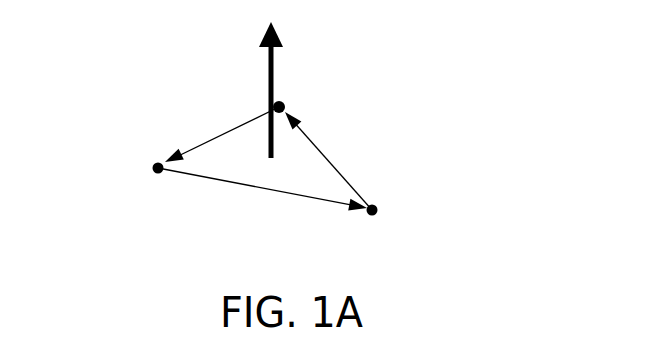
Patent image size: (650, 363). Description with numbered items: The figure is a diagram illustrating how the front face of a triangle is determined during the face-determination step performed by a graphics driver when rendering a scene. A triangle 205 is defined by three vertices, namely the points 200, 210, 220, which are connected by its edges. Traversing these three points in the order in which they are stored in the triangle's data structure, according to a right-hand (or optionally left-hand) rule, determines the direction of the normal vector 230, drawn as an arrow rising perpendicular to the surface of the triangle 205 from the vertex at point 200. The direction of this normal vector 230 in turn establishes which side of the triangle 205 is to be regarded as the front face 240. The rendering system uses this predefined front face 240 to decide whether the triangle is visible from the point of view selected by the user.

The point 200 is at (304, 88).
The triangle 205 is at (198, 123).
The point 210 is at (132, 164).
The point 220 is at (399, 209).
The normal vector 230 is at (267, 63).
The front face 240 is at (312, 170).